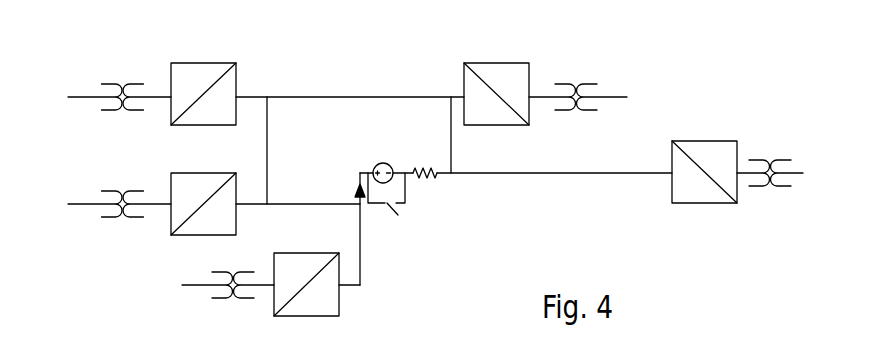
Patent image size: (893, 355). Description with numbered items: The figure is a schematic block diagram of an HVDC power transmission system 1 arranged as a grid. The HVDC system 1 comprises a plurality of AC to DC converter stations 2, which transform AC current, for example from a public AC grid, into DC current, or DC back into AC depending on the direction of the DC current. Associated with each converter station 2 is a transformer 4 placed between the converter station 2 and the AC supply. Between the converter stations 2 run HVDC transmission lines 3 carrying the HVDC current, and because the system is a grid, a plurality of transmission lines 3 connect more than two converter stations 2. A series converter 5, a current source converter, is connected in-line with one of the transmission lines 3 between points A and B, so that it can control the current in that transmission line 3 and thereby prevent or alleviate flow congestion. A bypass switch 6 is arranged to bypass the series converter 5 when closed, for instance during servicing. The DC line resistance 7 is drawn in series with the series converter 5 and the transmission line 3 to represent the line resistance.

The HVDC power transmission system 1 is at (661, 70).
The AC to DC converter station 2 is at (219, 70).
The HVDC transmission line 3 is at (321, 95).
The transformer 4 is at (117, 118).
The series converter 5 is at (386, 163).
The bypass switch 6 is at (402, 210).
The DC line resistance 7 is at (434, 180).